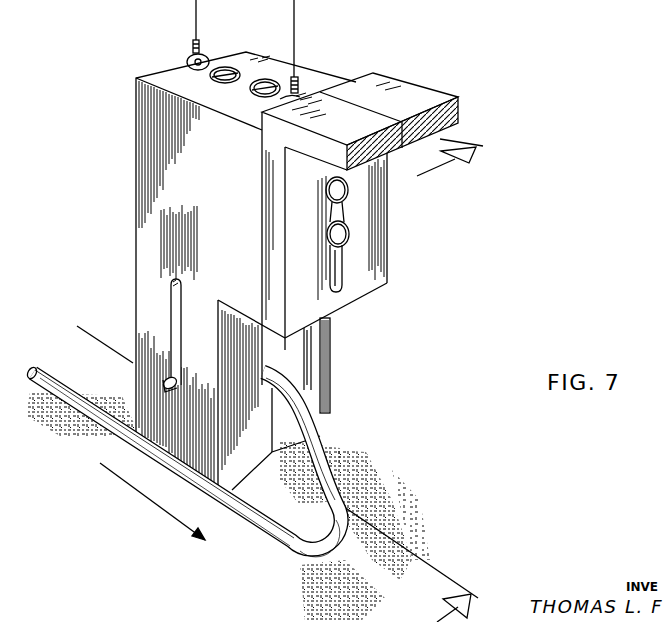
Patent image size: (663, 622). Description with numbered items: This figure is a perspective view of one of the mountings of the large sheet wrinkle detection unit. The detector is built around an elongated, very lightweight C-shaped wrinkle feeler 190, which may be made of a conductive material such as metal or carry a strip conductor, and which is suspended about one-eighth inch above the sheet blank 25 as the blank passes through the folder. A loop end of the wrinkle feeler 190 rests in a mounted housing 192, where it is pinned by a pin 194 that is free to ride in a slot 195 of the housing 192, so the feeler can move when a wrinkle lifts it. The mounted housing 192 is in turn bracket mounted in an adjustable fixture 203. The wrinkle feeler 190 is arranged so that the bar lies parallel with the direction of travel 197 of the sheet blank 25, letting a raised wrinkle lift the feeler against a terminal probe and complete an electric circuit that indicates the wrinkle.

The sheet blank 25 is at (232, 596).
The wrinkle feeler 190 is at (334, 438).
The mounted housing 192 is at (330, 396).
The pin 194 is at (163, 385).
The slot 195 is at (283, 351).
The direction of travel 197 is at (152, 512).
The adjustable fixture 203 is at (398, 261).